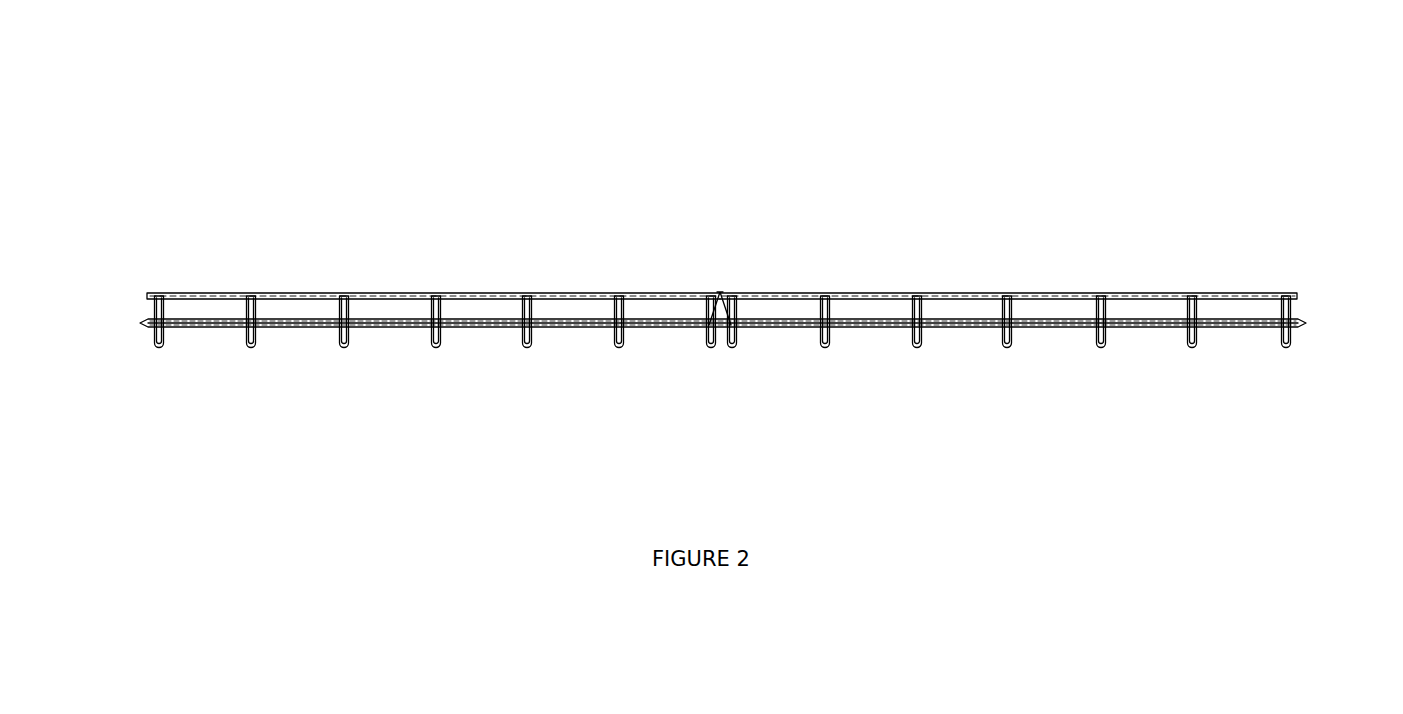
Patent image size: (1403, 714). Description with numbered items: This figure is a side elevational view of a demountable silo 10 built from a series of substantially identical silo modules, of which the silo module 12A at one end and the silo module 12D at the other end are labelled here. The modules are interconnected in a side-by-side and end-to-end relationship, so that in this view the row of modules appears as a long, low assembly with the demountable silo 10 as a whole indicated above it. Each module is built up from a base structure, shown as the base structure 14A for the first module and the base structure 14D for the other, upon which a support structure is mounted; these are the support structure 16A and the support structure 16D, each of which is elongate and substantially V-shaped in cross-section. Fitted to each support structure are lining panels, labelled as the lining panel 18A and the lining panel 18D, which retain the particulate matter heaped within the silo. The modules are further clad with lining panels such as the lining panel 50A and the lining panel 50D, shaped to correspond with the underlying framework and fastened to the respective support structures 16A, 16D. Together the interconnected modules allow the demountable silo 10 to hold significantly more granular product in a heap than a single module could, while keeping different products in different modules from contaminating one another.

The demountable silo 10 is at (758, 173).
The silo module 12A is at (455, 287).
The silo module 12D is at (955, 283).
The base structure 14A is at (517, 340).
The base structure 14D is at (933, 338).
The support structure 16A is at (152, 310).
The support structure 16D is at (1292, 305).
The lining panel 18A is at (508, 297).
The lining panel 18D is at (1153, 292).
The lining panel 50A is at (377, 308).
The lining panel 50D is at (1077, 309).